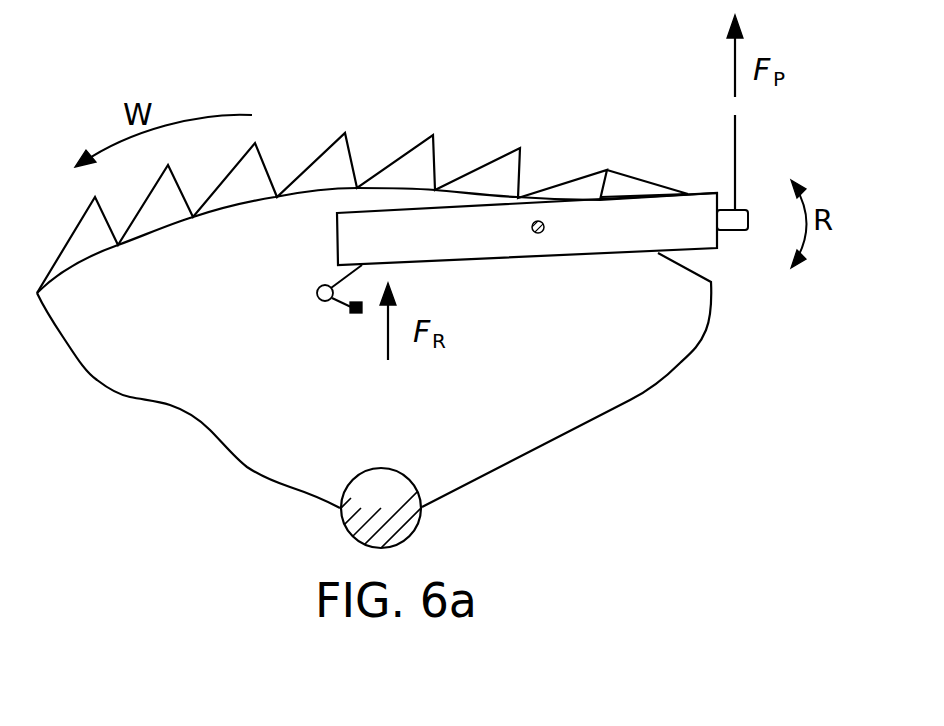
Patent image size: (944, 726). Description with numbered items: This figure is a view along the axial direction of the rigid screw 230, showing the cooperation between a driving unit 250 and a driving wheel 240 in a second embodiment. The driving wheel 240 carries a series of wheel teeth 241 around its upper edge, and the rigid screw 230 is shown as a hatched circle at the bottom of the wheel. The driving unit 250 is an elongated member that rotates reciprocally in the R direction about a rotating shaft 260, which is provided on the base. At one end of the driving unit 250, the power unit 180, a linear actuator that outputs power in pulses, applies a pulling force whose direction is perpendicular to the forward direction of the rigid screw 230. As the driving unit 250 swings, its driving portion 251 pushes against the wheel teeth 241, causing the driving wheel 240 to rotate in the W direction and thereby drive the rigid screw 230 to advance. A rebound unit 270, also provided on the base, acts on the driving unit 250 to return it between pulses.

The power unit 180 is at (735, 133).
The rigid screw 230 is at (395, 523).
The driving wheel 240 is at (545, 437).
The wheel teeth 241 is at (313, 167).
The driving unit 250 is at (472, 220).
The driving portion 251 is at (633, 190).
The rotating shaft 260 is at (538, 220).
The rebound unit 270 is at (317, 293).